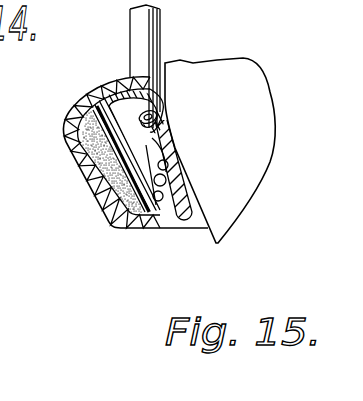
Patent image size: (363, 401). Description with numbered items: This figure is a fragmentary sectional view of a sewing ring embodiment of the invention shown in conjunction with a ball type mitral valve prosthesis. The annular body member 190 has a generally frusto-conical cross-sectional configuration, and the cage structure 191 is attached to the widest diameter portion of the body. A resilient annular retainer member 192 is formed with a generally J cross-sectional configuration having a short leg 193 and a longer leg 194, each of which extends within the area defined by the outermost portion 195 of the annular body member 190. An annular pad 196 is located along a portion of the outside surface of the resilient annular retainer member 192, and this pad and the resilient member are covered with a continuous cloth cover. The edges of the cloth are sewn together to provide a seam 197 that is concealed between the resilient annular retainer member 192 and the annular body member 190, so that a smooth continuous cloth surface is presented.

The annular body member 190 is at (182, 178).
The cage structure 191 is at (161, 28).
The resilient annular retainer member 192 is at (68, 127).
The short leg 193 is at (142, 96).
The longer leg 194 is at (156, 228).
The outermost portion 195 is at (142, 111).
The annular pad 196 is at (116, 200).
The seam 197 is at (142, 146).